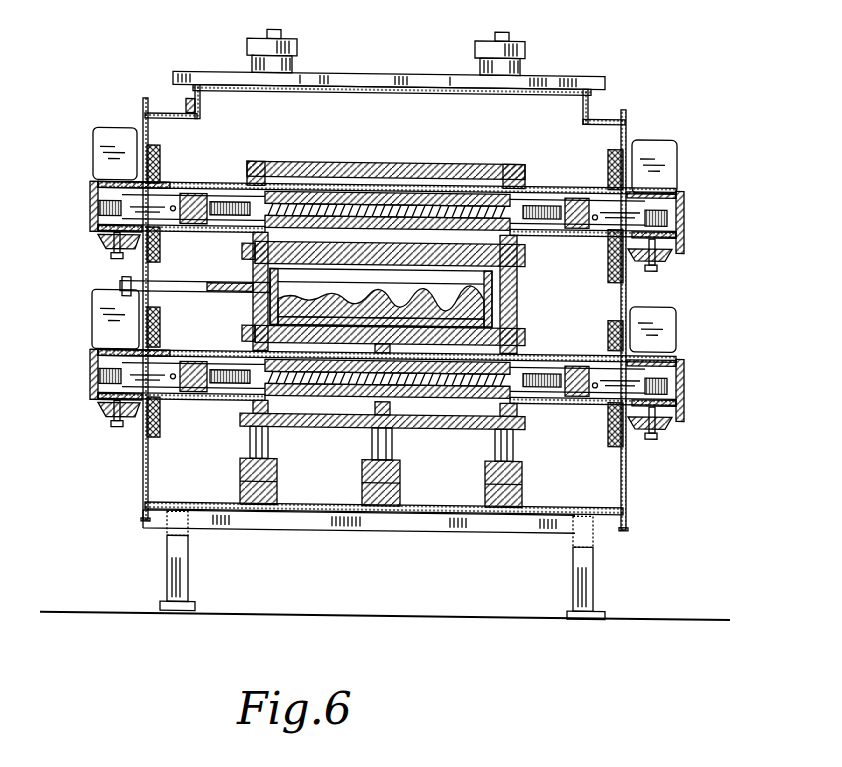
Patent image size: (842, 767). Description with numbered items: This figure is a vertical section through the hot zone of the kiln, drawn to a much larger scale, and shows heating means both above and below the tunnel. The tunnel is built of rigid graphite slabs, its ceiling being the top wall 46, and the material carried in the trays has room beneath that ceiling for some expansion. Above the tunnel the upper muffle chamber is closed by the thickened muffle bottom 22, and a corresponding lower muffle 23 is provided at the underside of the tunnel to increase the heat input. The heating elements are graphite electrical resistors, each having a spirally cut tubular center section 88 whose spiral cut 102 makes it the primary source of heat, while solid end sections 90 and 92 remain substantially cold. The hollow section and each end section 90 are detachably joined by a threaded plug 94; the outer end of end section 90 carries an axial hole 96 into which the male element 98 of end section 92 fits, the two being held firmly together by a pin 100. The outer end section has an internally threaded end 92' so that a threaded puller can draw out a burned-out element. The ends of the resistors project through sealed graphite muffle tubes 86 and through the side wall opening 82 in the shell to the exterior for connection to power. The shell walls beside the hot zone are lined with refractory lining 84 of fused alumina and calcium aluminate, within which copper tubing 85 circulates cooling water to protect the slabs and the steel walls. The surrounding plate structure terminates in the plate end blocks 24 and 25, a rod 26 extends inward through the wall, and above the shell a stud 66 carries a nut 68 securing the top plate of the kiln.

The muffle bottom at the hot zone 22 is at (538, 196).
The lower muffle 23 is at (520, 361).
The plate end block 24 is at (248, 259).
The plate end block 25 is at (250, 335).
The rod 26 is at (186, 292).
The top wall slab 46 is at (413, 268).
The stud 66 is at (293, 64).
The nut 68 is at (292, 44).
The side wall opening 82 is at (104, 256).
The refractory lining 84 is at (148, 146).
The copper tubing 85 is at (145, 341).
The muffle tube 86 is at (240, 194).
The center section 88 is at (410, 198).
The end section 90 is at (194, 195).
The end section 92 is at (392, 294).
The internally threaded end 92' is at (392, 296).
The threaded plug 94 is at (215, 186).
The axial hole 96 is at (188, 215).
The male element 98 is at (177, 187).
The pin 100 is at (173, 214).
The spiral cut 102 is at (326, 199).